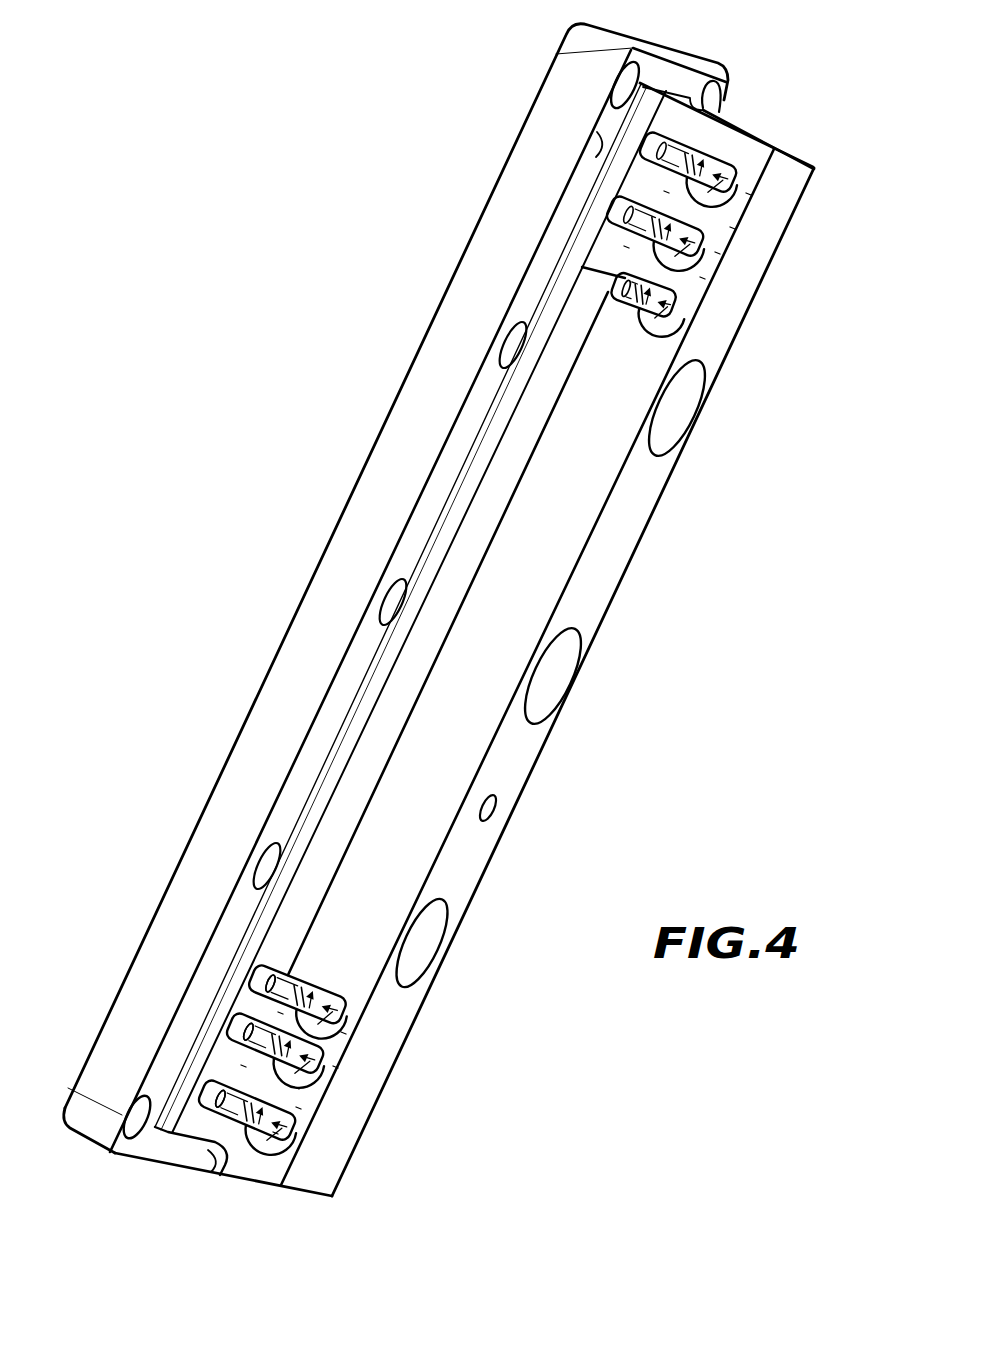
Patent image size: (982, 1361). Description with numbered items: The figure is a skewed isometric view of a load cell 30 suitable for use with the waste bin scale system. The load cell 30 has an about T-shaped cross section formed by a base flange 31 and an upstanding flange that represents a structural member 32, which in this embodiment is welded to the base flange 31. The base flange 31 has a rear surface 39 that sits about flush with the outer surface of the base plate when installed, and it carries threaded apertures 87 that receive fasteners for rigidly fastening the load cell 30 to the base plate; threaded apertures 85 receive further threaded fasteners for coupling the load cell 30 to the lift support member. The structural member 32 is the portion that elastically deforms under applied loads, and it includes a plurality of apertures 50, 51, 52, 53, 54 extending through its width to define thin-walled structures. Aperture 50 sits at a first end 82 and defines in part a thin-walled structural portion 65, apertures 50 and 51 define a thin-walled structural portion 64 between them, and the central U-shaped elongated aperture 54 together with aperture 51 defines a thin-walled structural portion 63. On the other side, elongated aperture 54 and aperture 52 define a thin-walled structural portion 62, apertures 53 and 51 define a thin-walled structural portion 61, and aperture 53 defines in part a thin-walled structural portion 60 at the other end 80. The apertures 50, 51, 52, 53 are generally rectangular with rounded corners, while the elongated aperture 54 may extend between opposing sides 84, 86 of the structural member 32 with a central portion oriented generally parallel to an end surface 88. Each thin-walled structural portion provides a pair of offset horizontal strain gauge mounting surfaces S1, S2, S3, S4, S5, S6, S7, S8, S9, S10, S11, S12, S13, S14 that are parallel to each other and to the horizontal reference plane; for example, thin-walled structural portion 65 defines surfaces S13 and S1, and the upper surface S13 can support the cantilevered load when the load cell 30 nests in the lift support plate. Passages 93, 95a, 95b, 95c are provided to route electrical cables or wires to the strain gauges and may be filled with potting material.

The load cell 30 is at (198, 121).
The base flange 31 is at (596, 150).
The structural member 32 is at (537, 560).
The rear surface 39 is at (440, 304).
The aperture 50 is at (740, 178).
The aperture 51 is at (703, 242).
The aperture 52 is at (325, 1057).
The aperture 53 is at (288, 1115).
The elongated aperture 54 is at (484, 527).
The thin-walled structural portion 60 is at (215, 1132).
The thin-walled structural portion 61 is at (243, 1066).
The thin-walled structural portion 62 is at (280, 1013).
The thin-walled structural portion 63 is at (627, 248).
The thin-walled structural portion 64 is at (667, 193).
The thin-walled structural portion 65 is at (718, 140).
The other end 80 is at (242, 1163).
The first end 82 is at (752, 138).
The opposing side 84 is at (713, 386).
The threaded apertures 85 is at (680, 408).
The opposing side 86 is at (577, 462).
The threaded apertures 87 is at (510, 345).
The end surface 88 is at (646, 514).
The passage 93 is at (494, 810).
The passage 95a is at (272, 972).
The passage 95b is at (250, 1028).
The passage 95c is at (222, 1092).
The strain gauge mounting surface S1 is at (732, 228).
The strain gauge mounting surface S2 is at (748, 194).
The strain gauge mounting surface S3 is at (702, 278).
The strain gauge mounting surface S4 is at (717, 253).
The strain gauge mounting surface S5 is at (668, 325).
The strain gauge mounting surface S6 is at (692, 312).
The strain gauge mounting surface S7 is at (343, 1033).
The strain gauge mounting surface S8 is at (352, 1012).
The strain gauge mounting surface S9 is at (296, 1088).
The strain gauge mounting surface S10 is at (335, 1067).
The strain gauge mounting surface S11 is at (275, 1133).
The strain gauge mounting surface S12 is at (298, 1108).
The strain gauge mounting surface S13 is at (773, 147).
The strain gauge mounting surface S14 is at (278, 1184).